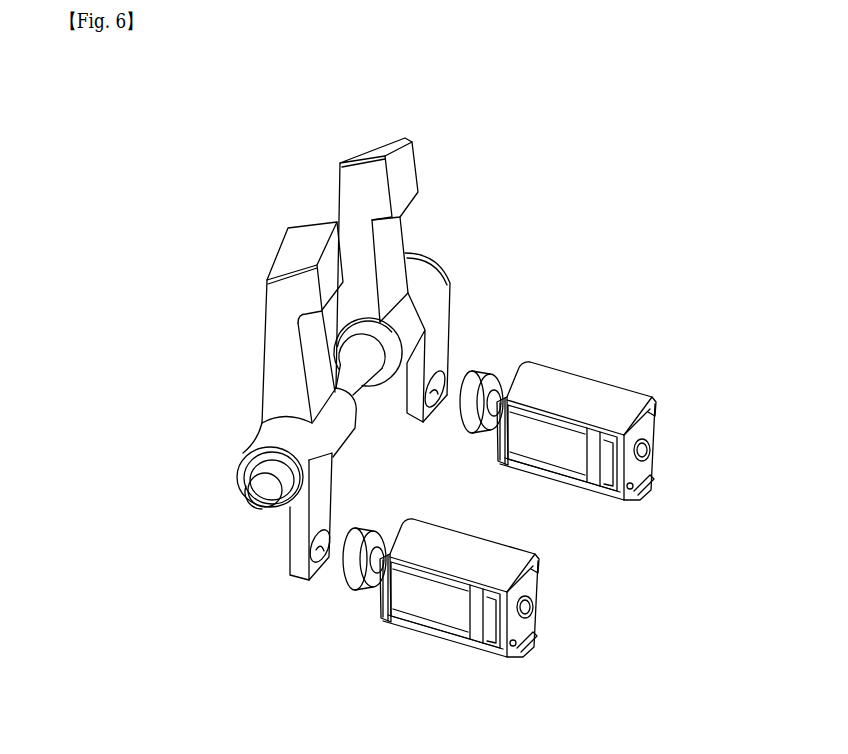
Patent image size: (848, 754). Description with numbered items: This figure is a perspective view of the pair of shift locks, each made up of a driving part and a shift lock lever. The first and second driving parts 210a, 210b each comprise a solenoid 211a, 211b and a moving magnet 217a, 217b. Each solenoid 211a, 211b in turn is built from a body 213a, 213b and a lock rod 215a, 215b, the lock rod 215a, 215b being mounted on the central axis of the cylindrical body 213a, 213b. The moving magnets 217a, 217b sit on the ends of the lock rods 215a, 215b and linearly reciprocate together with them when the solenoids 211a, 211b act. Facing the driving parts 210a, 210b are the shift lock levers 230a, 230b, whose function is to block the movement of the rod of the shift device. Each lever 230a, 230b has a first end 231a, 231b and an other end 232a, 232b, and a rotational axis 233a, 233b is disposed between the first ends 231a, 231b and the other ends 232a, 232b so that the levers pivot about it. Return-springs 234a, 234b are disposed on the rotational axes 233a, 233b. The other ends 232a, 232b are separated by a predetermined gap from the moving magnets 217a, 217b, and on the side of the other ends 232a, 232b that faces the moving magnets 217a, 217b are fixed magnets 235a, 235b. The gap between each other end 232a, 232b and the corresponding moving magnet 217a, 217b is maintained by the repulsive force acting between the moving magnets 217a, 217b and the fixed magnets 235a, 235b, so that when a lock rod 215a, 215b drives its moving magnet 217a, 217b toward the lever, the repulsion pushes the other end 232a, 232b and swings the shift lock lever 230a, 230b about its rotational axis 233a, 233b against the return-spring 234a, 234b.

The driving part 210a is at (587, 409).
The driving part 210b is at (473, 628).
The solenoid 211a is at (615, 392).
The solenoid 211b is at (538, 568).
The body 213a is at (547, 447).
The body 213b is at (423, 603).
The lock rod 215a is at (500, 373).
The lock rod 215b is at (388, 588).
The moving magnet 217a is at (488, 377).
The moving magnet 217b is at (350, 580).
The shift lock lever 230a is at (446, 282).
The shift lock lever 230b is at (247, 420).
The first end 231a is at (407, 173).
The first end 231b is at (331, 272).
The other end 232a is at (415, 413).
The other end 232b is at (293, 560).
The rotational axis 233a is at (443, 260).
The rotational axis 233b is at (258, 490).
The return-spring 234a is at (368, 356).
The return-spring 234b is at (257, 458).
The fixed magnet 235a is at (433, 400).
The fixed magnet 235b is at (322, 567).